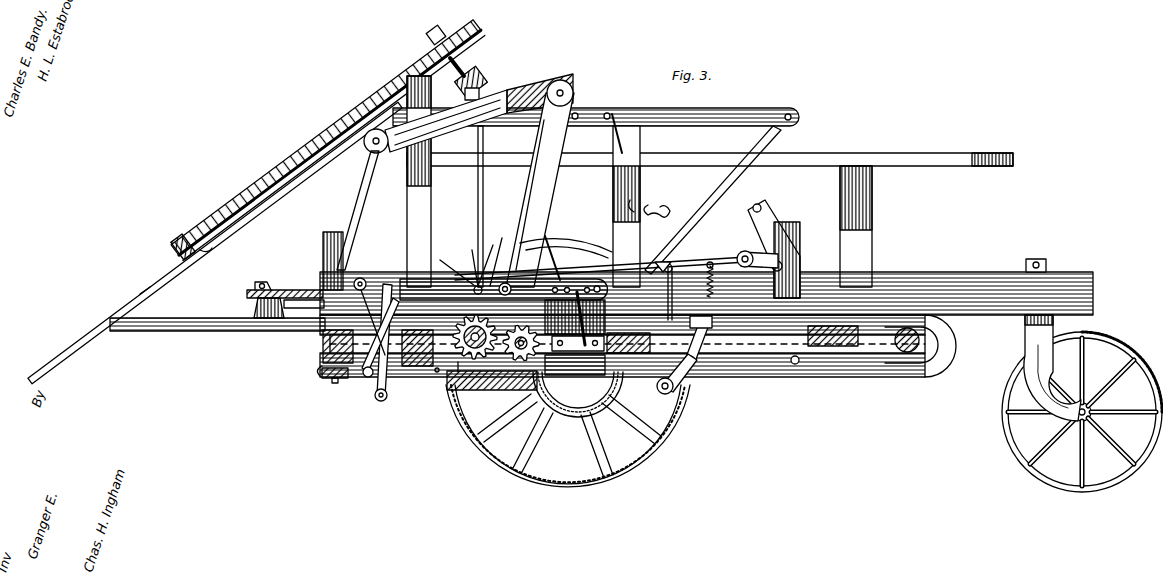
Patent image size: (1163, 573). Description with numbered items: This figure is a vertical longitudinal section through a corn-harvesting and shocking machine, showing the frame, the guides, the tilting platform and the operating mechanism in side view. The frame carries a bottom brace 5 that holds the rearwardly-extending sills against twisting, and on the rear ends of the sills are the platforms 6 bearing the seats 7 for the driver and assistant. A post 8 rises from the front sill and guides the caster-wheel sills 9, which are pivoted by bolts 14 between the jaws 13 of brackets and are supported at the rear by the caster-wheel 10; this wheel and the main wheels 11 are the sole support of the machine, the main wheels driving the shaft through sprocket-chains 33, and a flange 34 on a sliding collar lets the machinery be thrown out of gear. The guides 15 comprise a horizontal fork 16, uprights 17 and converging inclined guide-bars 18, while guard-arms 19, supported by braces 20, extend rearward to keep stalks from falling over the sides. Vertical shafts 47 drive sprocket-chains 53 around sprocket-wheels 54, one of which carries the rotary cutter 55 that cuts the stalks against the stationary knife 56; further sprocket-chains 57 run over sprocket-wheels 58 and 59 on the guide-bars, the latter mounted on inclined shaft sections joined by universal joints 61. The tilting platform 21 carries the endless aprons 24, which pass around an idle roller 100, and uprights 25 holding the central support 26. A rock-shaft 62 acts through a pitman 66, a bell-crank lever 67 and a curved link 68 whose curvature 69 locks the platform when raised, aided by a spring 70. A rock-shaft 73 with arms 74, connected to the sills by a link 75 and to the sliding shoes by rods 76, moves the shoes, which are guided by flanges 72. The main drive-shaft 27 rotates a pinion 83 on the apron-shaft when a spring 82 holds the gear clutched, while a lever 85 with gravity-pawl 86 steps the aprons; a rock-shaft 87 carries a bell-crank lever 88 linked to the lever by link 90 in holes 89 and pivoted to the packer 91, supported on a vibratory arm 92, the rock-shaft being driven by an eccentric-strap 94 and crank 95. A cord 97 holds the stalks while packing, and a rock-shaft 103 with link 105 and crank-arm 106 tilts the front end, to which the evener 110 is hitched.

The brace 5 is at (471, 393).
The platform 6 is at (381, 355).
The seat 7 is at (658, 212).
The post 8 is at (322, 244).
The caster-wheel sill 9 is at (897, 280).
The caster-wheel 10 is at (1003, 408).
The main wheel 11 is at (630, 448).
The jaw 13 is at (452, 265).
The bolt 14 is at (488, 257).
The guide 15 is at (99, 315).
The horizontal fork 16 is at (183, 318).
The upright 17 is at (431, 200).
The inclined guide-bar 18 is at (147, 290).
The guard-arm 19 is at (712, 122).
The brace 20 is at (727, 196).
The tilting platform 21 is at (793, 378).
The endless apron 24 is at (915, 370).
The upright 25 is at (641, 198).
The central support 26 is at (710, 152).
The main drive-shaft 27 is at (447, 398).
The sprocket-chain 33 is at (589, 394).
The circumferential flange 34 is at (578, 392).
The vertical shaft 47 is at (485, 200).
The sprocket-chain 53 is at (282, 291).
The sprocket-wheel 54 is at (263, 283).
The rotary cutter 55 is at (276, 307).
The stationary knife 56 is at (304, 305).
The sprocket-chain 57 is at (236, 205).
The sprocket-wheel 58 is at (190, 240).
The sprocket-wheel 59 is at (437, 32).
The universal joint 61 is at (484, 86).
The rock-shaft 62 is at (375, 344).
The pitman 66 is at (703, 262).
The bell-crank lever 67 is at (755, 254).
The curved link 68 is at (800, 262).
The curvature point 69 is at (782, 264).
The spring 70 is at (718, 292).
The flange 72 is at (702, 337).
The rock-shaft 73 is at (705, 385).
The upwardly-extending arm 74 is at (672, 383).
The link 75 is at (672, 294).
The rod 76 is at (676, 310).
The spring 82 is at (530, 360).
The pinion 83 is at (486, 388).
The lever 85 is at (368, 316).
The gravity-pawl 86 is at (578, 343).
The rock-shaft 87 is at (504, 289).
The bell-crank lever 88 is at (538, 220).
The hole 89 is at (572, 275).
The link 90 is at (606, 303).
The packer 91 is at (540, 86).
The vibratory arm 92 is at (357, 218).
The eccentric-strap 94 is at (472, 250).
The crank 95 is at (501, 238).
The cord 97 is at (623, 150).
The roller 100 is at (958, 344).
The rock-shaft 103 is at (412, 368).
The link 105 is at (380, 272).
The crank-arm 106 is at (365, 376).
The evener 110 is at (322, 374).